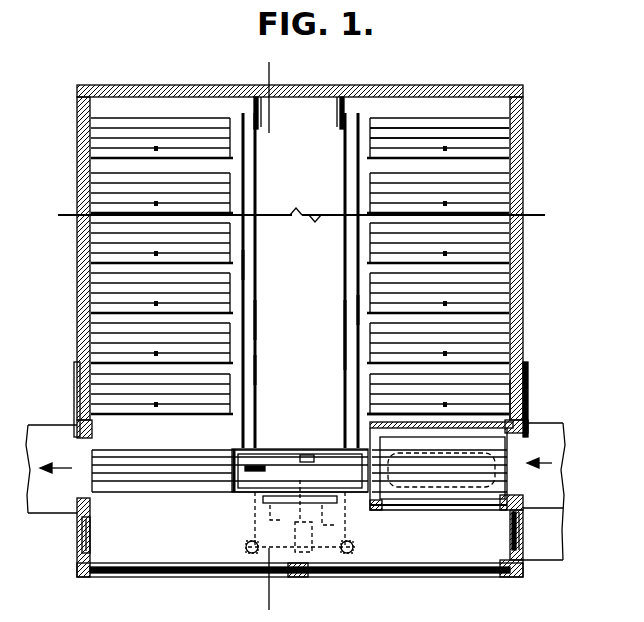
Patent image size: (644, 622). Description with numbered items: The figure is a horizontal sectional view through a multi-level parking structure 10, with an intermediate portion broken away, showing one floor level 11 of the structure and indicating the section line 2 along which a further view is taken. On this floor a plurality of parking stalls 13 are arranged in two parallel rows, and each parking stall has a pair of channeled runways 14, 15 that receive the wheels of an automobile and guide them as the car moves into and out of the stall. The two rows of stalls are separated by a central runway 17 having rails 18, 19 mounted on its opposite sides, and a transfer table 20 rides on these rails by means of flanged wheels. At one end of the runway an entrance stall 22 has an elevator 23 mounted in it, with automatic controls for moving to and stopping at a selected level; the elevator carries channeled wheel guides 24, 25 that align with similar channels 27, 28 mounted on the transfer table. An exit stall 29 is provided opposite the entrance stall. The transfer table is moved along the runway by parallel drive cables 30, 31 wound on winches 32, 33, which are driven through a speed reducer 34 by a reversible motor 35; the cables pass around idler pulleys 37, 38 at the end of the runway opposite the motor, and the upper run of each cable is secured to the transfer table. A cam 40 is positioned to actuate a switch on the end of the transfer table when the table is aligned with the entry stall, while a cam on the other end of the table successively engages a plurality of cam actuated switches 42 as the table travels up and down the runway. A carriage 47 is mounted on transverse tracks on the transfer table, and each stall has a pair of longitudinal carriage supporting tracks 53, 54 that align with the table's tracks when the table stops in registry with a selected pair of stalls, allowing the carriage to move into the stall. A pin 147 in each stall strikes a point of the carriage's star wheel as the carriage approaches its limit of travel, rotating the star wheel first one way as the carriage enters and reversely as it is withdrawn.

The section line 2- 2 is at (270, 69).
The structure 10 is at (527, 260).
The floor level 11 is at (493, 385).
The parking stalls 13 is at (487, 332).
The channeled runway 14 is at (495, 378).
The channeled runway 15 is at (527, 402).
The runway 17 is at (300, 320).
The rail 18 is at (245, 196).
The rail 19 is at (355, 180).
The transfer table 20 is at (292, 448).
The entrance stall 22 is at (460, 494).
The elevator 23 is at (410, 498).
The channeled wheel guide 24 is at (508, 481).
The channeled wheel guide 25 is at (508, 452).
The channel 27 is at (254, 490).
The channel 28 is at (314, 454).
The exit stall 29 is at (133, 466).
The drive cable 30 is at (257, 372).
The drive cable 31 is at (345, 356).
The winch 32 is at (237, 565).
The winch 33 is at (385, 578).
The speed reducer 34 is at (315, 579).
The reversible motor 35 is at (345, 578).
The idler pulley 37 is at (253, 103).
The idler pulley 38 is at (345, 100).
The cam 40 is at (366, 312).
The cam actuated switches 42 is at (245, 268).
The carriage 47 is at (268, 448).
The carriage supporting track 53 is at (497, 127).
The carriage supporting track 54 is at (497, 142).
The pin 147 is at (440, 250).